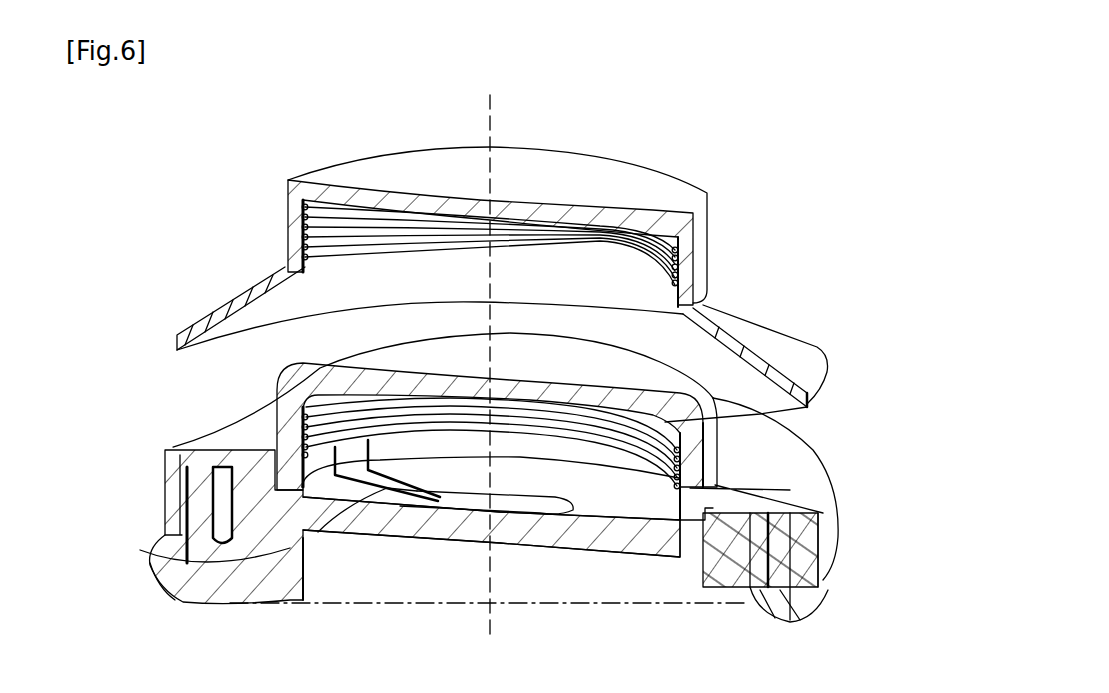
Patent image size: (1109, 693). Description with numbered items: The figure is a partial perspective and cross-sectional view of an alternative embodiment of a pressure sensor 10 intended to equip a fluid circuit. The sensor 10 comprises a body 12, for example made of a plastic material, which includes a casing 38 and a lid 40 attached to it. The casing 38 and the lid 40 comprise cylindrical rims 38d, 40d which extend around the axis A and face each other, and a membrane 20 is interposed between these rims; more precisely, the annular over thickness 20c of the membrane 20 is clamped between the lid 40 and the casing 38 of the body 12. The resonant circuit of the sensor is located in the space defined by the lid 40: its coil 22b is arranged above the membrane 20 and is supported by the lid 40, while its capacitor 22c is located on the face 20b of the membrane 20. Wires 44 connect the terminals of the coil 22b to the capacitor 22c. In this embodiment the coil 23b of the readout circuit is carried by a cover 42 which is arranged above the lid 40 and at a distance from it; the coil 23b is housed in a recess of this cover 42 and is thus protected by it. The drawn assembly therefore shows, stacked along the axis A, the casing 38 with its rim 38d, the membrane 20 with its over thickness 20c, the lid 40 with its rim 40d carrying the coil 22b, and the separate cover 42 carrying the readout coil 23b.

The pressure sensor 10 is at (867, 292).
The body 12 is at (806, 608).
The membrane 20 is at (628, 545).
The face of the membrane 20b is at (620, 500).
The annular over thickness 20c is at (835, 515).
The coil of the resonant circuit 22b is at (807, 407).
The capacitor 22c is at (463, 520).
The coil of the readout circuit 23b is at (660, 235).
The casing 38 is at (185, 606).
The cylindrical rim of the casing 38d is at (140, 551).
The lid 40 is at (177, 470).
The cylindrical rim of the lid 40d is at (277, 421).
The cover 42 is at (747, 317).
The wires 44 is at (377, 483).
The axis A is at (492, 122).